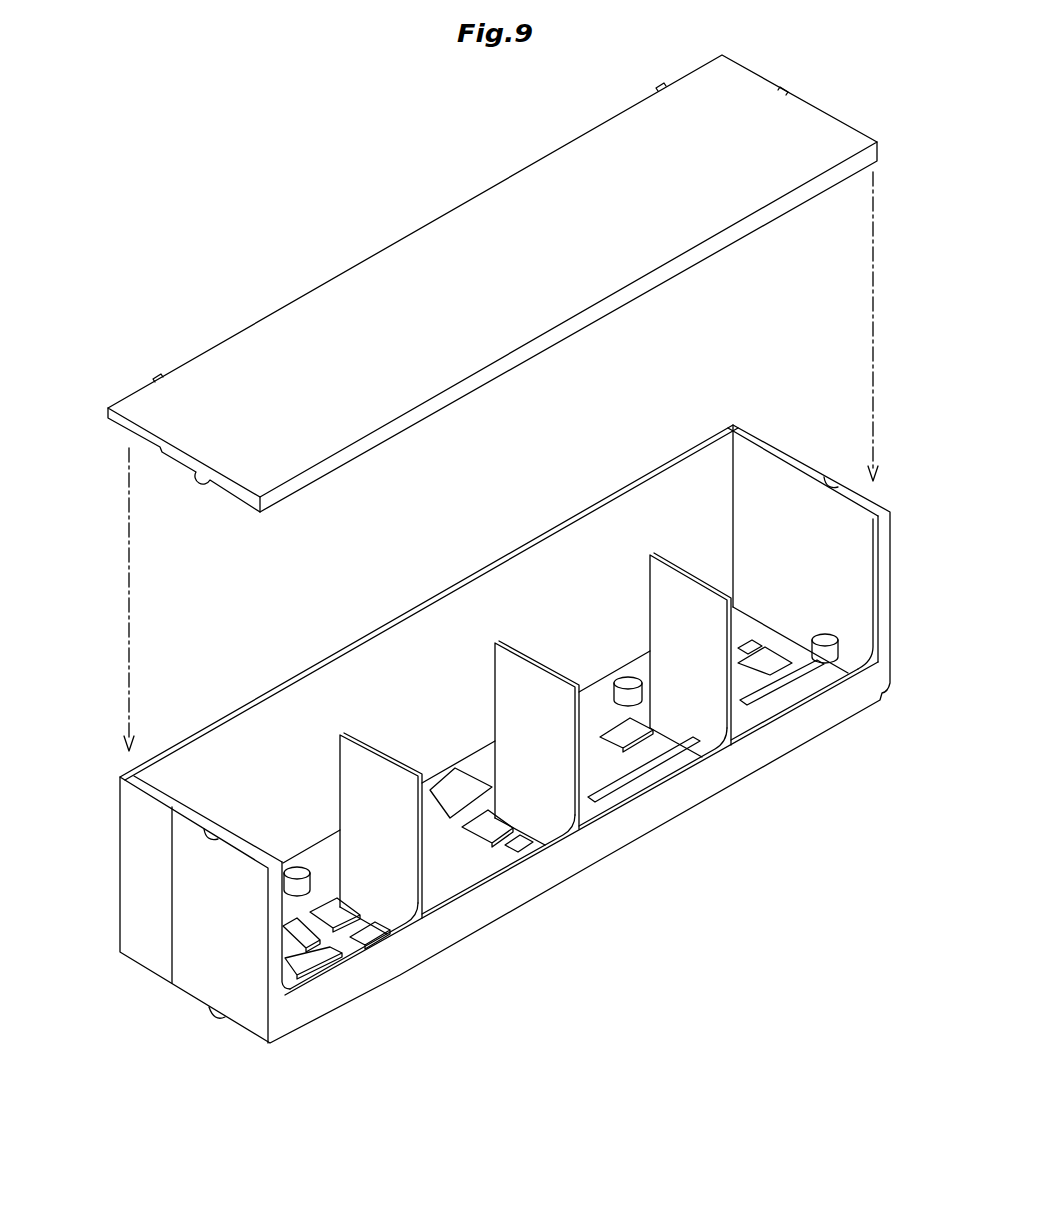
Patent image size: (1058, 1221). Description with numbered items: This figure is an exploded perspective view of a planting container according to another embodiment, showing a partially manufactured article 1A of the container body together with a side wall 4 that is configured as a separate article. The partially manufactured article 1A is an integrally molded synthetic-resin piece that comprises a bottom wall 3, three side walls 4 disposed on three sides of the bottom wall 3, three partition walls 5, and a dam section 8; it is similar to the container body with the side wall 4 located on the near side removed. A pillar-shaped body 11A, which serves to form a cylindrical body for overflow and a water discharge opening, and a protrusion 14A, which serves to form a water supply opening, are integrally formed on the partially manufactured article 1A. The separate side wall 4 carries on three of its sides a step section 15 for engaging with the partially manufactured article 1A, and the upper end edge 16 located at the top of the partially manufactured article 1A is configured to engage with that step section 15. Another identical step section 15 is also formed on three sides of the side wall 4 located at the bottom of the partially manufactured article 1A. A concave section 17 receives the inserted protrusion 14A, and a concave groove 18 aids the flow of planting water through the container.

The partially manufactured article 1A is at (744, 410).
The bottom wall 3 is at (425, 630).
The side wall 4 is at (455, 222).
The partition wall 5 is at (682, 604).
The dam section 8 is at (625, 822).
The pillar-shaped body 11A is at (628, 681).
The protrusion 14A is at (822, 660).
The step section 15 is at (880, 163).
The upper end edge 16 is at (622, 484).
The concave section 17 is at (832, 480).
The concave groove 18 is at (622, 773).